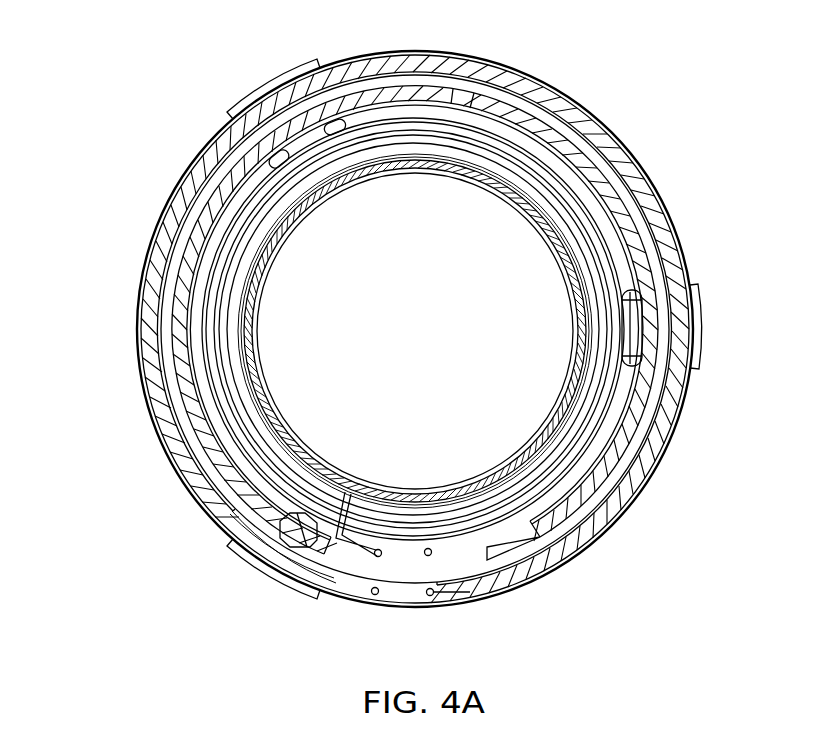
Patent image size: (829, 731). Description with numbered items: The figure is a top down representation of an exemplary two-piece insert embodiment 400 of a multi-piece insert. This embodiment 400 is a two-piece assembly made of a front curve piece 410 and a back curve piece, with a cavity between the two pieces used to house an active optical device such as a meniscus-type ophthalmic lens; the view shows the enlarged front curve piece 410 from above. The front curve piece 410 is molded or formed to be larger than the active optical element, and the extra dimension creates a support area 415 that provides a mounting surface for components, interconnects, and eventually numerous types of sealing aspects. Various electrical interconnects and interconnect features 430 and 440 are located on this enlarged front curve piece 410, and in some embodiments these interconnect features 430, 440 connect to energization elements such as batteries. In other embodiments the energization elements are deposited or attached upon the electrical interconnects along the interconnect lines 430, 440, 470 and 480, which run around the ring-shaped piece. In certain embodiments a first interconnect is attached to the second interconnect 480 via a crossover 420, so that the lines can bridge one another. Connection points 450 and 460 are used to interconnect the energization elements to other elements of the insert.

The two-piece insert embodiment 400 is at (146, 105).
The front curve piece 410 is at (321, 251).
The support area 415 is at (441, 564).
The crossover 420 is at (472, 98).
The interconnect feature 430 is at (652, 353).
The interconnect feature 440 is at (648, 481).
The connection point 450 is at (445, 599).
The connection point 460 is at (385, 602).
The interconnect line 470 is at (228, 506).
The second interconnect 480 is at (164, 456).